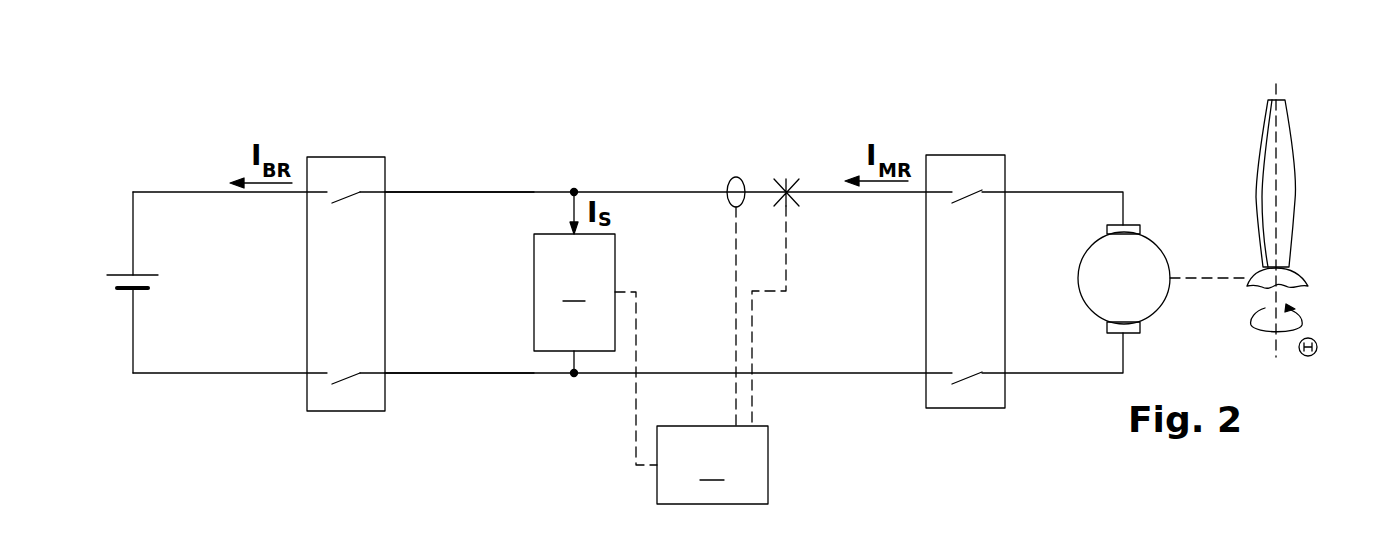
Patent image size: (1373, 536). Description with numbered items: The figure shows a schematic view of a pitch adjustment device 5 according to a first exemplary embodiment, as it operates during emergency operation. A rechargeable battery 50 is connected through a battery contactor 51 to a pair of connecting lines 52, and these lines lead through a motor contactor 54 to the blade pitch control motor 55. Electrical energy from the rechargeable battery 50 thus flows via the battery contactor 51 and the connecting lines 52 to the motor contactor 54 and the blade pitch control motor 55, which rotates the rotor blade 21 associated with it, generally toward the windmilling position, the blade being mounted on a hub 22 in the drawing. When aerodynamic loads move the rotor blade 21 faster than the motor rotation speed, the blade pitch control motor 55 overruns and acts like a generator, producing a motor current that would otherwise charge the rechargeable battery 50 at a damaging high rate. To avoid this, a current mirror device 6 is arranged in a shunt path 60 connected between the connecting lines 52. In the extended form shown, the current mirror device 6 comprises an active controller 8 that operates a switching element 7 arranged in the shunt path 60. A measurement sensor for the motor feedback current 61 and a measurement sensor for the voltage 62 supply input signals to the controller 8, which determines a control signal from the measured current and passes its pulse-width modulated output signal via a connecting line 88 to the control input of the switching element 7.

The pitch adjustment device 5 is at (213, 168).
The rechargeable battery 50 is at (132, 273).
The battery contactor 51 is at (346, 156).
The connecting lines 52 is at (458, 191).
The motor contactor 54 is at (966, 155).
The blade pitch control motor 55 is at (1153, 240).
The current mirror device 6 is at (640, 347).
The switching element 7 is at (574, 292).
The controller 8 is at (712, 465).
The shunt path 60 is at (573, 372).
The measurement sensor for the motor feedback current 61 is at (787, 178).
The measurement sensor for the voltage 62 is at (736, 177).
The connecting line 88 is at (636, 407).
The rotor blade 21 is at (1290, 188).
The rotor hub 22 is at (1292, 282).